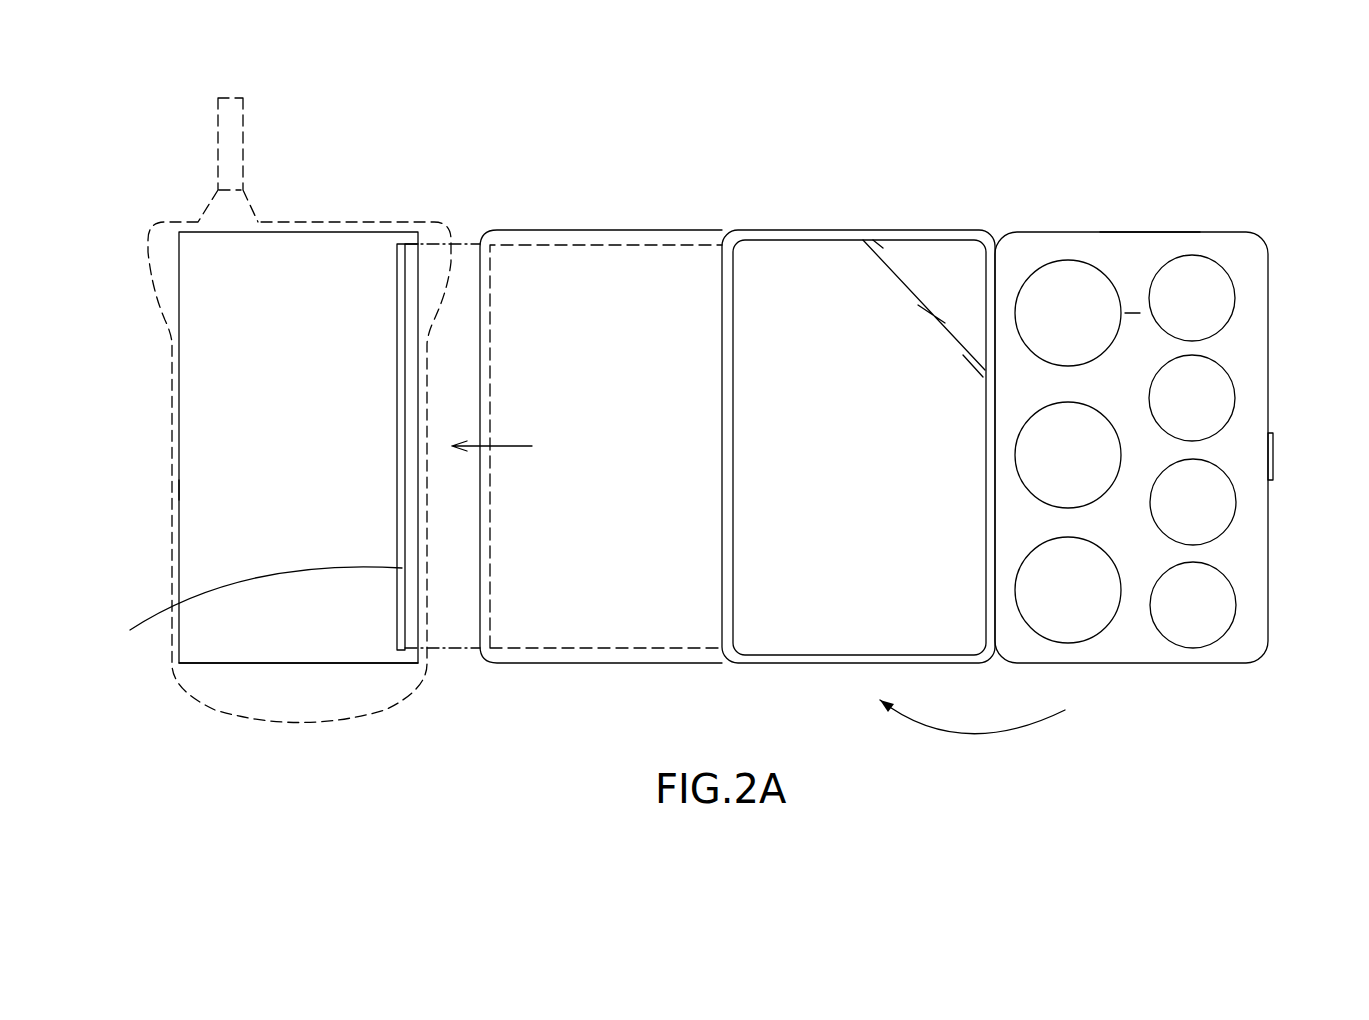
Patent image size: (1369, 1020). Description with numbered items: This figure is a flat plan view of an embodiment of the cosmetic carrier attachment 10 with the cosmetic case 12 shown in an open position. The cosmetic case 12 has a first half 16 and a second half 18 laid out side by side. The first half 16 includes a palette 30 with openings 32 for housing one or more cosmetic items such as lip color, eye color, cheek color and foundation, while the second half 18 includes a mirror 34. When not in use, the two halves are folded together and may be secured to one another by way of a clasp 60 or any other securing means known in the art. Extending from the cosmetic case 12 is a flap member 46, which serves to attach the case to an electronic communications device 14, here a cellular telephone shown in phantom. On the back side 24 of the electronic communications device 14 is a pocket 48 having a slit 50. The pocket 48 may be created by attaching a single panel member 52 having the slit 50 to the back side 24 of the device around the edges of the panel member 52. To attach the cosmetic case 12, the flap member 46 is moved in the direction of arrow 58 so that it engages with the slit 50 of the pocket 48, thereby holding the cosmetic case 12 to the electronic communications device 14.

The cosmetic carrier attachment 10 is at (607, 133).
The cosmetic case 12 is at (1035, 226).
The electronic communications device 14 is at (147, 258).
The first half 16 is at (1145, 243).
The second half 18 is at (817, 240).
The back side 24 is at (322, 706).
The palette 30 is at (1134, 389).
The openings 32 is at (1210, 305).
The mirror 34 is at (862, 423).
The flap member 46 is at (612, 272).
The pocket 48 is at (218, 488).
The slit 50 is at (239, 619).
The panel member 52 is at (290, 433).
The arrow 58 is at (508, 446).
The clasp 60 is at (1273, 452).